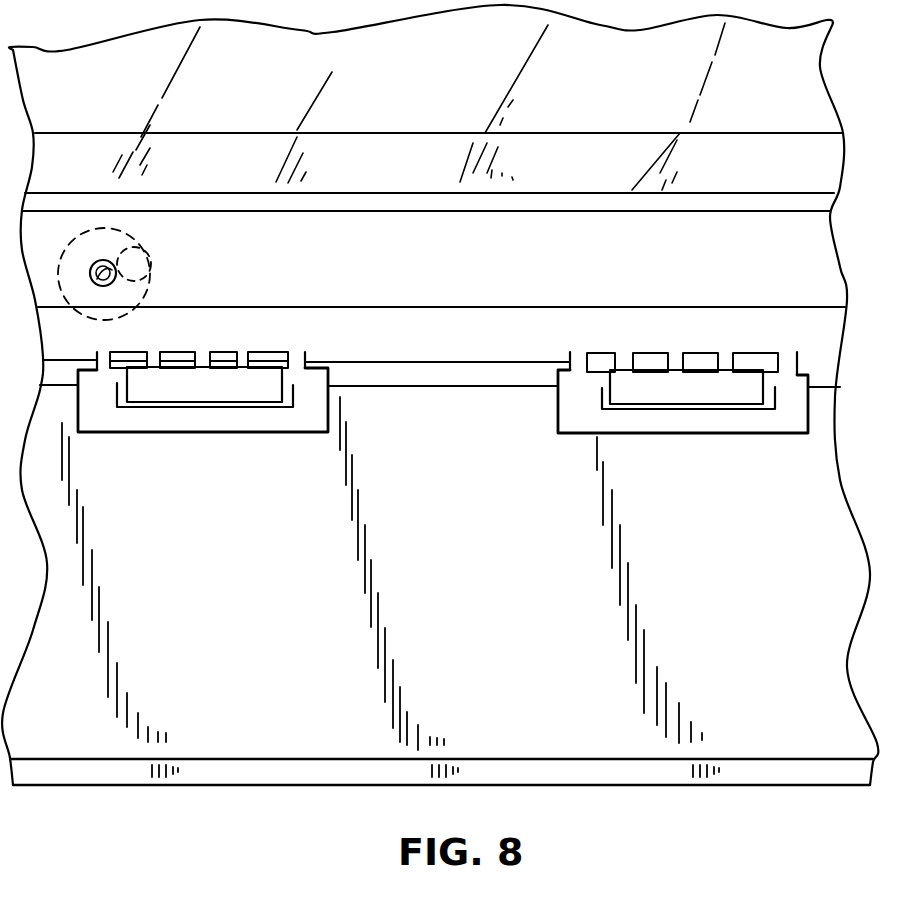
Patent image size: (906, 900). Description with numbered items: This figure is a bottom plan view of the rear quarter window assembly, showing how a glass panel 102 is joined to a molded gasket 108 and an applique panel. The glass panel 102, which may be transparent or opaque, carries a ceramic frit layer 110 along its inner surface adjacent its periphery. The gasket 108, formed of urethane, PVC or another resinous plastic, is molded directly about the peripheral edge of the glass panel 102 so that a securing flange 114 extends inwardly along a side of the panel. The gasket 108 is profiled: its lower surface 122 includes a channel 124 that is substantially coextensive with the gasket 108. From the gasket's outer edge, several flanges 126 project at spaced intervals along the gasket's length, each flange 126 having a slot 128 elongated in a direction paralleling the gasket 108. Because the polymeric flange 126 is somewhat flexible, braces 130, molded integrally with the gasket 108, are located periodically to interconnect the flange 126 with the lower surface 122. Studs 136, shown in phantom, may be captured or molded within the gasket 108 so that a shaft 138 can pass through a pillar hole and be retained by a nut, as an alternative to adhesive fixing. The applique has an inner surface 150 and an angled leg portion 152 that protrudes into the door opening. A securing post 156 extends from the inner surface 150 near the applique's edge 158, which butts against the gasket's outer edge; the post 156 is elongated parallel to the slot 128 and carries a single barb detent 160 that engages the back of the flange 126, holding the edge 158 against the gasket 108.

The glass panel 102 is at (455, 117).
The gasket 108 is at (718, 193).
The ceramic frit layer 110 is at (596, 175).
The securing flange 114 is at (422, 207).
The lower surface 122 is at (326, 228).
The channel 124 is at (482, 282).
The flange 126 is at (222, 418).
The slot 128 is at (257, 405).
The braces 130 is at (296, 358).
The studs 136 is at (151, 287).
The shaft 138 is at (114, 258).
The inner surface 150 is at (478, 618).
The leg portion 152 is at (348, 778).
The securing post 156 is at (118, 401).
The edge 158 is at (413, 387).
The single barb detent 160 is at (175, 383).